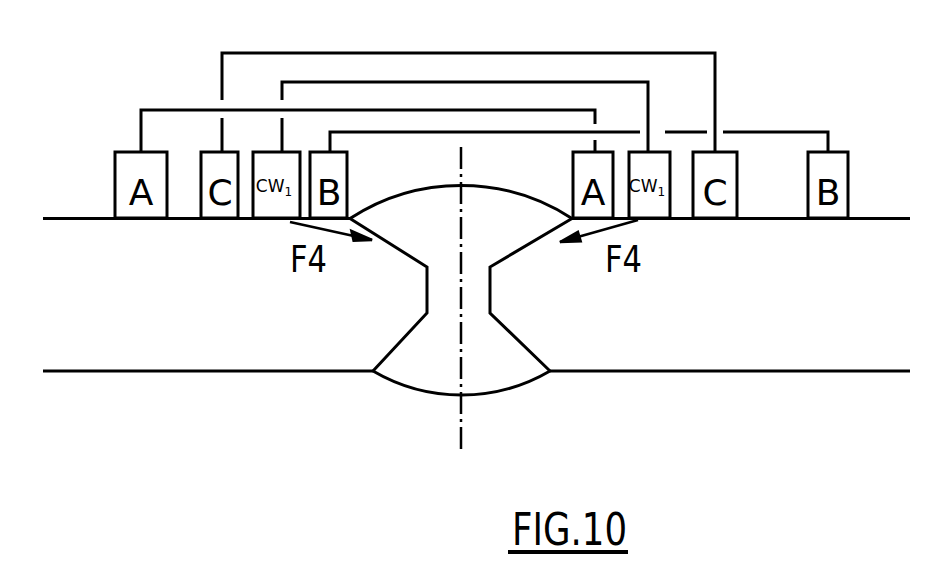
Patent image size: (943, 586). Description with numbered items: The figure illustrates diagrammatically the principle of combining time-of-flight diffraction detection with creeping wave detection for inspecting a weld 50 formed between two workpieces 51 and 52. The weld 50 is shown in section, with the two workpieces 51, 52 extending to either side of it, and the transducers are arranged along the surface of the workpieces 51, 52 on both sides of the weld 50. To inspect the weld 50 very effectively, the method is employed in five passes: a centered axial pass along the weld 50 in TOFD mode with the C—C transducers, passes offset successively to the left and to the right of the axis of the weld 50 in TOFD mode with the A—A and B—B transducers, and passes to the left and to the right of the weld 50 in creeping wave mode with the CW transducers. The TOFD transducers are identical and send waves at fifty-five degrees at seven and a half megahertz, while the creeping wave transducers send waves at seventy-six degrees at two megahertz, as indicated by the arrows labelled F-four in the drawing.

The weld 50 is at (433, 363).
The workpiece 51 is at (202, 322).
The workpiece 52 is at (755, 338).